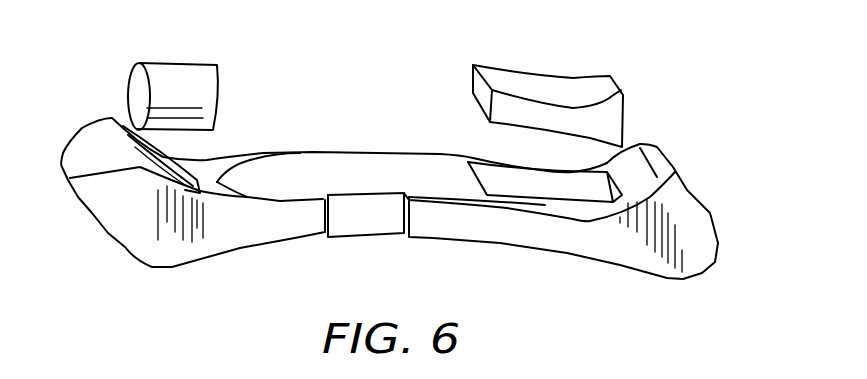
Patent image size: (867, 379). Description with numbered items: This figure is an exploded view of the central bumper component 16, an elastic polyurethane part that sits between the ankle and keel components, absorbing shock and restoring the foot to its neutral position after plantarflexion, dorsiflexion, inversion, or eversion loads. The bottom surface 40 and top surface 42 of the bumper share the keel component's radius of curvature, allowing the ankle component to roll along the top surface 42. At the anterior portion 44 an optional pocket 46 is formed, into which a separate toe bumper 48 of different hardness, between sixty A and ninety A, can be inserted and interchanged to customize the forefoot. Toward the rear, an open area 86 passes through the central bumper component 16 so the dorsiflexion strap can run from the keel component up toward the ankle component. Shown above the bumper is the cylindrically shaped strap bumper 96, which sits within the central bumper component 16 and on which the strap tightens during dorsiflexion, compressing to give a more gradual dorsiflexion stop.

The central bumper component 16 is at (540, 235).
The bottom surface 40 is at (246, 250).
The top surface 42 is at (317, 167).
The anterior portion 44 is at (677, 212).
The pocket 46 is at (503, 177).
The toe bumper 48 is at (611, 89).
The open area 86 is at (165, 177).
The strap bumper 96 is at (158, 72).